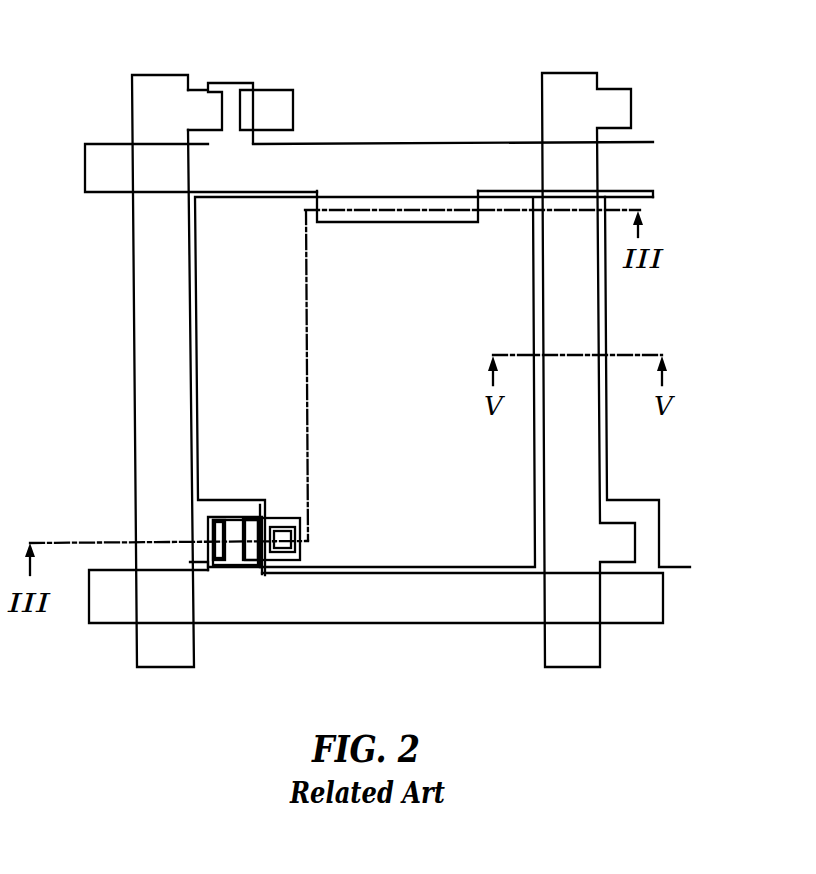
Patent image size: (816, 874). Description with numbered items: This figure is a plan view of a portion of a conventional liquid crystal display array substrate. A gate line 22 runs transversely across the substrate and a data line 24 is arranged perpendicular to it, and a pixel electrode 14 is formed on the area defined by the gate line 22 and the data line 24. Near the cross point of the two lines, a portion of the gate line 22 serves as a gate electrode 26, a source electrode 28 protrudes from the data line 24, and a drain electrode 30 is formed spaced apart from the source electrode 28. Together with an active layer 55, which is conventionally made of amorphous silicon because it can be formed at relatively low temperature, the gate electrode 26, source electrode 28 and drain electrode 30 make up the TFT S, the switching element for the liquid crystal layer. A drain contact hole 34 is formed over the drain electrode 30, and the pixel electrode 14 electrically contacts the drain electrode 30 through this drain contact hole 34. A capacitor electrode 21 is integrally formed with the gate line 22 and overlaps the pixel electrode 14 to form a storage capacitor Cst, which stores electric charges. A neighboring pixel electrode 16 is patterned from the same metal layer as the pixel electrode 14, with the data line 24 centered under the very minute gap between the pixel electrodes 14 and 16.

The pixel electrode 14 is at (195, 297).
The pixel electrode 16 is at (655, 196).
The capacitor electrode 21 is at (350, 220).
The gate line 22 is at (382, 608).
The data line 24 is at (148, 397).
The gate electrode 26 is at (231, 513).
The source electrode 28 is at (195, 527).
The drain electrode 30 is at (284, 552).
The drain contact hole 34 is at (270, 560).
The active layer 55 is at (235, 565).
The TFT S is at (240, 516).
The storage capacitor Cst is at (410, 195).